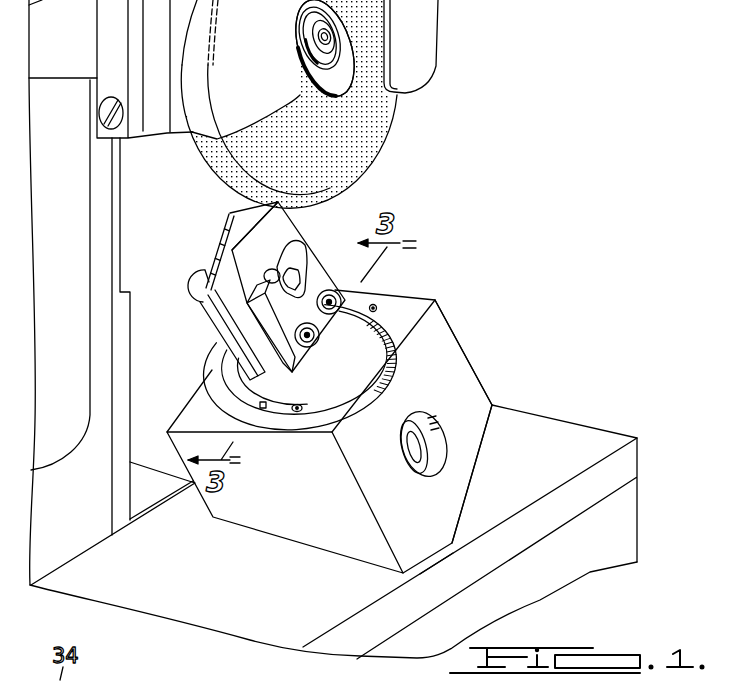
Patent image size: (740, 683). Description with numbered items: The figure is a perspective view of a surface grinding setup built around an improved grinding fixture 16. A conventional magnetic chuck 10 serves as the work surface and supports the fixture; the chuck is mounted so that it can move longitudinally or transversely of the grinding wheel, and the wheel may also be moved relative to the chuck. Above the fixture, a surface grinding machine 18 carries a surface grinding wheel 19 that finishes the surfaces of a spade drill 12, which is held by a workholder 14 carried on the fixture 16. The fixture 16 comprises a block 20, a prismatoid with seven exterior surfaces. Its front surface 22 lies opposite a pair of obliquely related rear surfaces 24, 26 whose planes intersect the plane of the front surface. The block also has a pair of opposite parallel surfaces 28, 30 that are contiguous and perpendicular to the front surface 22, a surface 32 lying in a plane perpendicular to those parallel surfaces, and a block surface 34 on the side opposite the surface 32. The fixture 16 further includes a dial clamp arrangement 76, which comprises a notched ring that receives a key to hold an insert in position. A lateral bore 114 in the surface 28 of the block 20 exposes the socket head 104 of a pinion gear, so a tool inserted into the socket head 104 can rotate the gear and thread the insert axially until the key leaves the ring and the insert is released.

The magnetic chuck 10 is at (600, 433).
The spade drill 12 is at (295, 218).
The workholder 14 is at (318, 265).
The grinding fixture 16 is at (390, 288).
The surface grinding machine 18 is at (445, 43).
The surface grinding wheel 19 is at (365, 148).
The block 20 is at (446, 356).
The front surface 22 is at (406, 307).
The rear surface 24 is at (482, 458).
The rear surface 26 is at (440, 545).
The parallel surface 28 is at (462, 373).
The parallel surface 30 is at (210, 380).
The block surface 32 is at (267, 512).
The block surface 34 is at (450, 323).
The dial clamp arrangement 76 is at (227, 403).
The socket head 104 is at (420, 413).
The lateral bore 114 is at (447, 430).